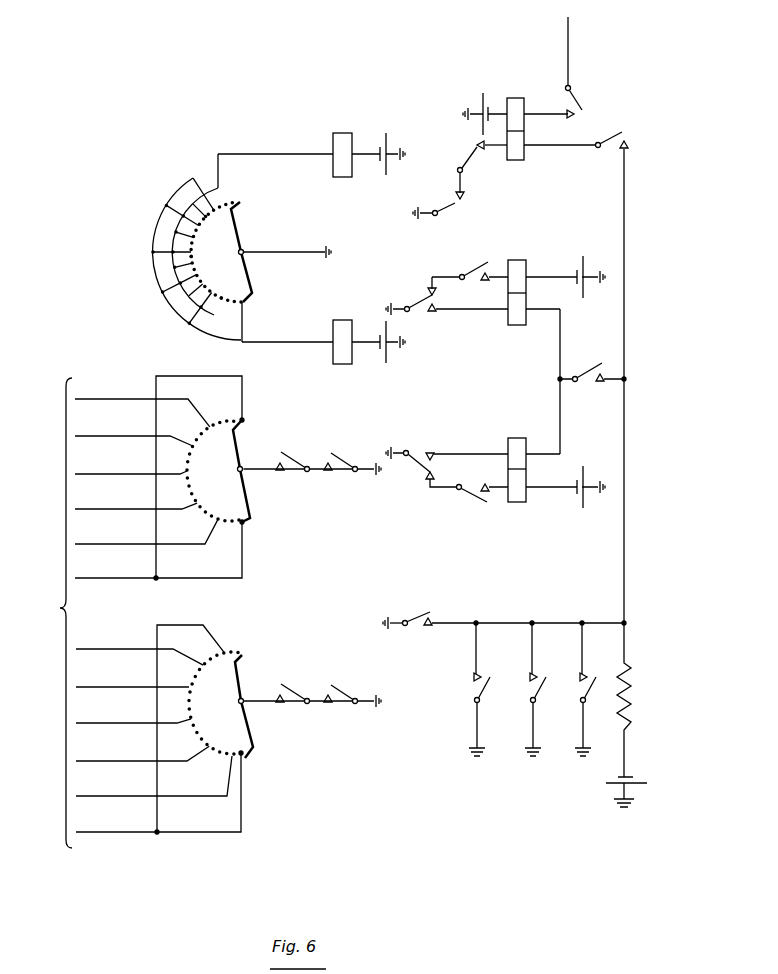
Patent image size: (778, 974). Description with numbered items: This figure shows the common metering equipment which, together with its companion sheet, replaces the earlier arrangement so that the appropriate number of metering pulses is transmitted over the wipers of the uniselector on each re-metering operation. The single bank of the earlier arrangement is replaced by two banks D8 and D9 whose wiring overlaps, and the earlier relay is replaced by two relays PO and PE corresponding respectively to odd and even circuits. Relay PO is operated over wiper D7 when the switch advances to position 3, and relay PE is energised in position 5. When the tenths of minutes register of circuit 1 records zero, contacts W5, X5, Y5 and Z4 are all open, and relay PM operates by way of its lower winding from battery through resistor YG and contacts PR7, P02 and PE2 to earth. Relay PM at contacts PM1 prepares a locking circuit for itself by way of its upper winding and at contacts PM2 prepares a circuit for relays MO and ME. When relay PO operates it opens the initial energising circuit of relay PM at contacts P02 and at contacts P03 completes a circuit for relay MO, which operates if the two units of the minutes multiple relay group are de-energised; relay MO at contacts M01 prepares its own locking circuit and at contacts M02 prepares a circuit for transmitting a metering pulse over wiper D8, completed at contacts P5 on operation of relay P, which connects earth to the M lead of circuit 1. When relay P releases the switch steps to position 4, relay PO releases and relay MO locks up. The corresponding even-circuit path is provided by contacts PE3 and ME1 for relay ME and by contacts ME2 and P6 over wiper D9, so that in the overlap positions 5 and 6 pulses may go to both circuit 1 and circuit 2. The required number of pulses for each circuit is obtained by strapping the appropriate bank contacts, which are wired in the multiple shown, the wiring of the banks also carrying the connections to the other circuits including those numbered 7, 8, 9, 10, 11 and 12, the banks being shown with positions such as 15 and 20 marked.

The relay PO is at (352, 114).
The relay PE is at (352, 297).
The relay PM is at (528, 78).
The relay MO is at (527, 238).
The relay ME is at (530, 418).
The wiper D7 is at (242, 248).
The bank D8 is at (202, 478).
The bank D9 is at (204, 729).
The contacts PM1 is at (591, 63).
The contacts PR7 is at (590, 374).
The contacts PO2 P02 is at (472, 169).
The contacts PE2 is at (451, 213).
The contacts MO1 M01 is at (458, 275).
The contacts PO3 P03 is at (447, 312).
The contacts PM2 is at (592, 382).
The contacts PE3 is at (413, 451).
The contacts ME1 is at (457, 493).
The contacts MO2 M02 is at (277, 453).
The contacts P5 is at (346, 455).
The contacts ME2 is at (277, 686).
The contacts P6 is at (346, 687).
The contacts W5 is at (504, 610).
The contacts X5 is at (489, 689).
The contacts Y5 is at (544, 689).
The contacts Z4 is at (594, 689).
The resistor YG is at (629, 715).
The M lead M is at (54, 613).
The circuit 1 is at (142, 403).
The circuit 2 is at (139, 647).
The position 3 is at (134, 431).
The position 4 is at (132, 677).
The position 5 is at (131, 464).
The position 6 is at (133, 713).
The multiple wire 7 is at (136, 499).
The multiple wire 8 is at (142, 751).
The multiple wire 9 is at (146, 531).
The multiple wire 10 is at (154, 776).
The multiple wire 11 is at (115, 568).
The multiple wire 12 is at (116, 822).
The selector contact position 15 is at (201, 262).
The selector contact position 20 is at (226, 286).